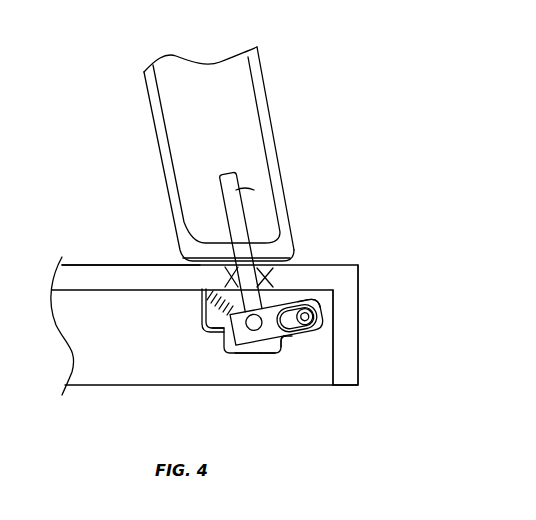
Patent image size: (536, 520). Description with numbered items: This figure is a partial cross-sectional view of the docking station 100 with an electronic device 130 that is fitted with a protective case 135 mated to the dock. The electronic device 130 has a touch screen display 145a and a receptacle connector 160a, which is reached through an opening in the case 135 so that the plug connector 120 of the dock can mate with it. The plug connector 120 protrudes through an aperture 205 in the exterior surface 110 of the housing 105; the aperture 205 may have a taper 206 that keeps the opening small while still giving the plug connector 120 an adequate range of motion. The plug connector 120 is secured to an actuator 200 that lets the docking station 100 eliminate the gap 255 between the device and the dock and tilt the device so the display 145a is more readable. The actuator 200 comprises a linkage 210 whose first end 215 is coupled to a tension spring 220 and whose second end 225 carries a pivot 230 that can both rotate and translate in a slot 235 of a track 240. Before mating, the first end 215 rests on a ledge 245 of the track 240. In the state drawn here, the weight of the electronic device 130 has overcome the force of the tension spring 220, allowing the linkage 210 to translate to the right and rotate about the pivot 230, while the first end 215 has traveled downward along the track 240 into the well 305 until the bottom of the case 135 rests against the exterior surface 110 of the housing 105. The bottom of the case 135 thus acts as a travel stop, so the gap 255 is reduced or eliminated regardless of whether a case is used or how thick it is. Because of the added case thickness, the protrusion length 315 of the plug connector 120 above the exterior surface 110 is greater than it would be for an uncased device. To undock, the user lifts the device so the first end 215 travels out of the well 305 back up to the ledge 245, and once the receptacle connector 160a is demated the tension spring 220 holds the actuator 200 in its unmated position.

The docking station 100 is at (342, 285).
The housing 105 is at (342, 304).
The exterior surface 110 is at (107, 264).
The plug connector 120 is at (233, 212).
The electronic device 130 is at (238, 91).
The case 135 is at (281, 168).
The touch screen display 145a is at (264, 137).
The receptacle connector 160a is at (240, 198).
The actuator 200 is at (181, 331).
The aperture 205 is at (268, 276).
The taper 206 is at (225, 276).
The linkage 210 is at (271, 316).
The first end 215 is at (246, 354).
The tension spring 220 is at (204, 302).
The second end 225 is at (314, 300).
The pivot 230 is at (318, 313).
The slot 235 is at (312, 325).
The track 240 is at (285, 345).
The ledge 245 is at (218, 338).
The gap 255 is at (167, 252).
The well 305 is at (282, 354).
The protrusion length 315 is at (219, 248).